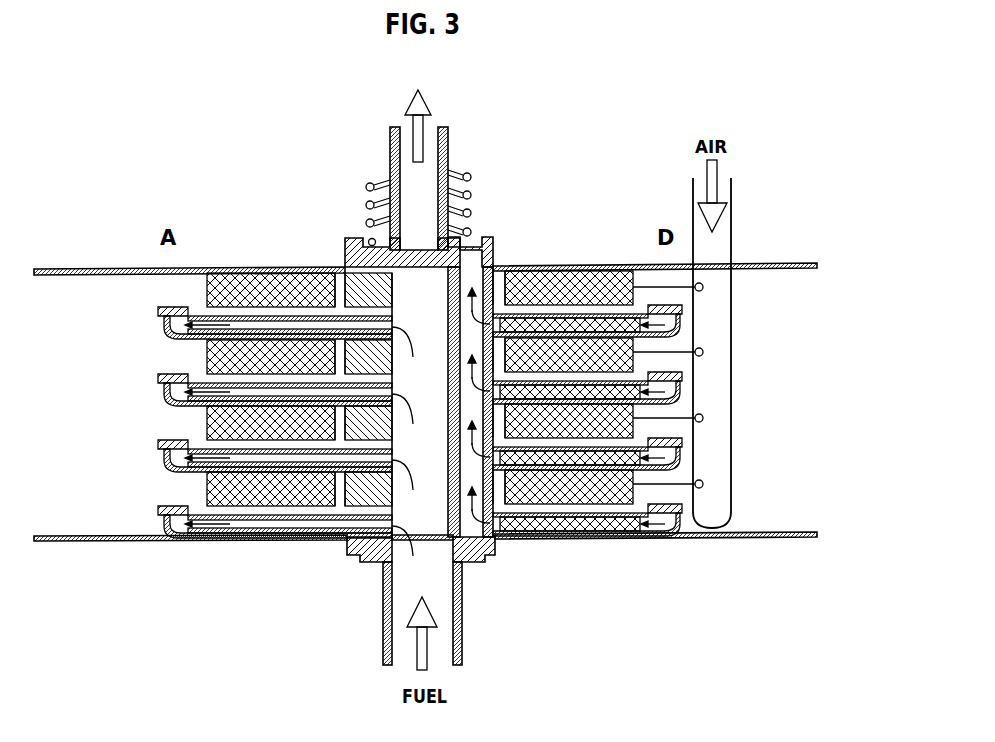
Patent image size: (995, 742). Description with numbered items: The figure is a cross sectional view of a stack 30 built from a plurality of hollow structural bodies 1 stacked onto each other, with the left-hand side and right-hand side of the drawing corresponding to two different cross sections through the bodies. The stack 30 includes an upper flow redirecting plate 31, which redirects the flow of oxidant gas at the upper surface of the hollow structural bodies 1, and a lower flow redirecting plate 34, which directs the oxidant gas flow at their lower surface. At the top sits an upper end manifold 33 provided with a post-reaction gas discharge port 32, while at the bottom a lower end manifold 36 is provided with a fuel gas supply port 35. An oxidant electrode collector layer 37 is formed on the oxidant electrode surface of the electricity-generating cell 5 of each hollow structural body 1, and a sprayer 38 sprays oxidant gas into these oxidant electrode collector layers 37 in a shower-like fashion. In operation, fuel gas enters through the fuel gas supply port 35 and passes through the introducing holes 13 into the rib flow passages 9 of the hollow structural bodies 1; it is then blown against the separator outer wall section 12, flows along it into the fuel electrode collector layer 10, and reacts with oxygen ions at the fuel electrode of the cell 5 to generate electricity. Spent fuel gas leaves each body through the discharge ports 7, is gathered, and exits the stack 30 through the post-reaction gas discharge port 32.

The hollow structural body 1 is at (148, 400).
The electricity-generating cell 5 is at (597, 505).
The discharge port 7 is at (497, 271).
The rib flow passage 9 is at (200, 476).
The fuel electrode collector layer 10 is at (553, 540).
The separator outer wall section 12 is at (167, 333).
The introducing hole 13 is at (398, 317).
The stack 30 is at (558, 142).
The upper flow redirecting plate 31 is at (100, 269).
The post-reaction gas discharge port 32 is at (428, 152).
The upper end manifold 33 is at (493, 236).
The lower flow redirecting plate 34 is at (108, 541).
The fuel gas supply port 35 is at (405, 592).
The lower end manifold 36 is at (473, 554).
The oxidant electrode collector layer 37 is at (270, 285).
The sprayer 38 is at (728, 363).